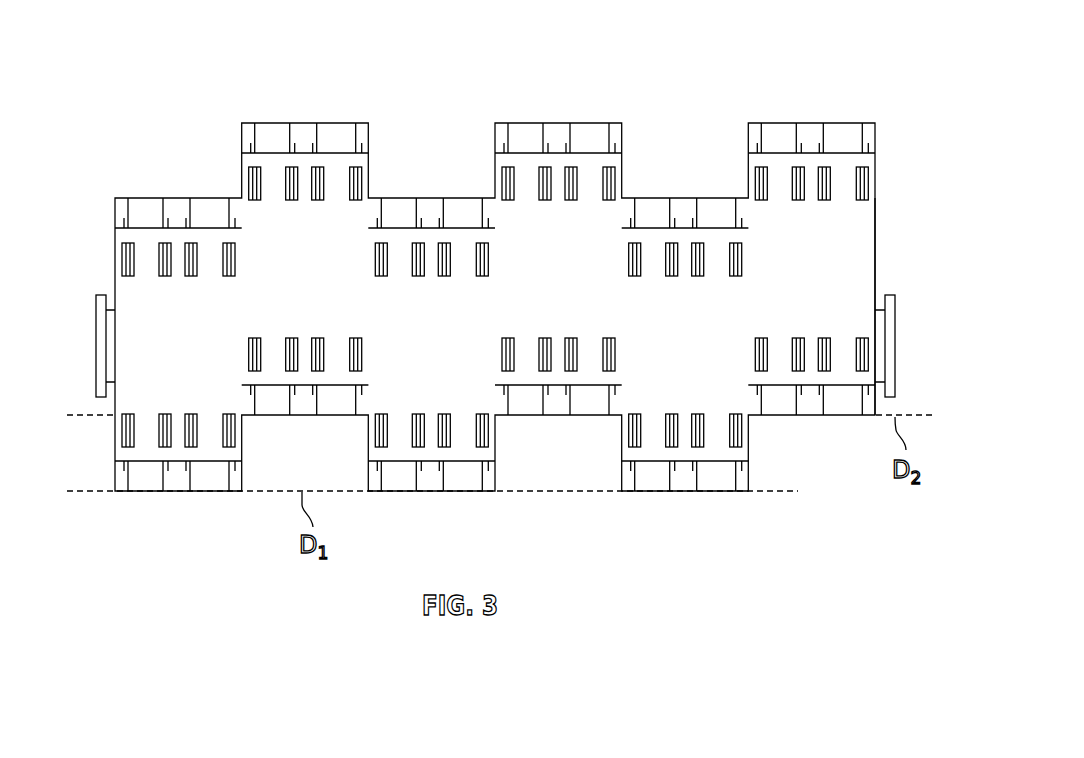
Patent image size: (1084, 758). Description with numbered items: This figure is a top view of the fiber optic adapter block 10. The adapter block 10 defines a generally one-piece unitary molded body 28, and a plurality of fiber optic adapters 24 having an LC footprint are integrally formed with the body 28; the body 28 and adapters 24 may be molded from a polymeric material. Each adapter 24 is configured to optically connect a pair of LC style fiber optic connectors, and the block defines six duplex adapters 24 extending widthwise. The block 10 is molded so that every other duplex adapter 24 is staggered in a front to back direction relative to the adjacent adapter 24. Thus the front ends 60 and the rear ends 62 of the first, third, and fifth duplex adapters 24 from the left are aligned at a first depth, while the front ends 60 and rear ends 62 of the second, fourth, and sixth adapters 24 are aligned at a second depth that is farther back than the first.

The fiber optic adapter block 10 is at (514, 310).
The fiber optic adapter 24 is at (822, 432).
The one-piece unitary molded body 28 is at (865, 243).
The front end 60 is at (270, 416).
The rear end 62 is at (588, 122).